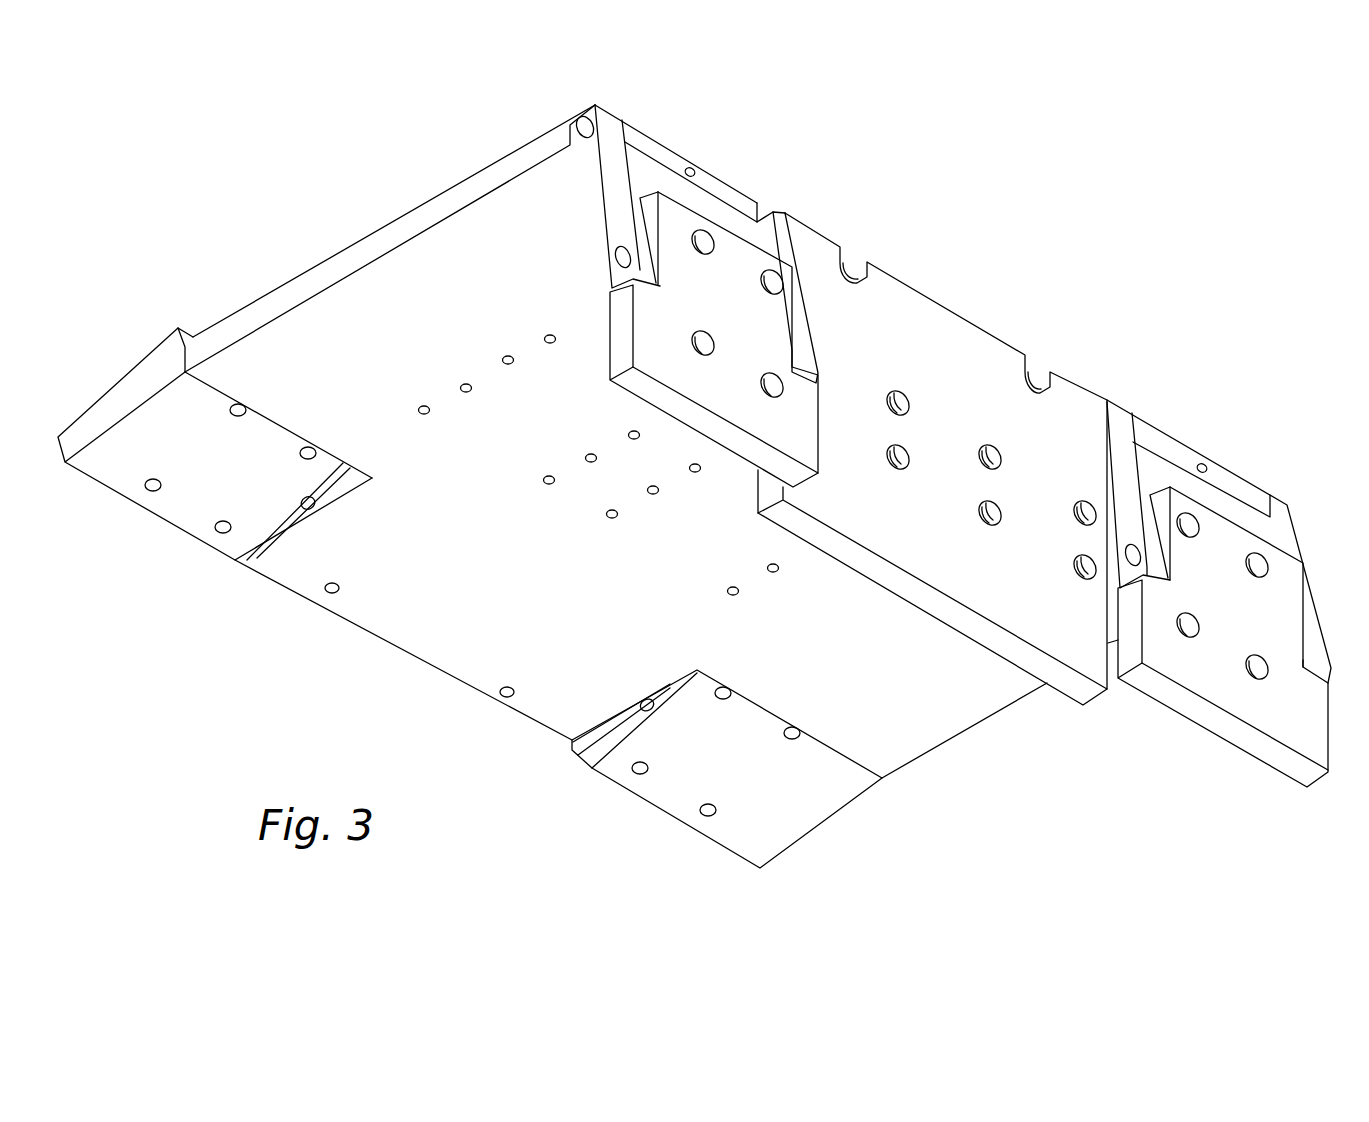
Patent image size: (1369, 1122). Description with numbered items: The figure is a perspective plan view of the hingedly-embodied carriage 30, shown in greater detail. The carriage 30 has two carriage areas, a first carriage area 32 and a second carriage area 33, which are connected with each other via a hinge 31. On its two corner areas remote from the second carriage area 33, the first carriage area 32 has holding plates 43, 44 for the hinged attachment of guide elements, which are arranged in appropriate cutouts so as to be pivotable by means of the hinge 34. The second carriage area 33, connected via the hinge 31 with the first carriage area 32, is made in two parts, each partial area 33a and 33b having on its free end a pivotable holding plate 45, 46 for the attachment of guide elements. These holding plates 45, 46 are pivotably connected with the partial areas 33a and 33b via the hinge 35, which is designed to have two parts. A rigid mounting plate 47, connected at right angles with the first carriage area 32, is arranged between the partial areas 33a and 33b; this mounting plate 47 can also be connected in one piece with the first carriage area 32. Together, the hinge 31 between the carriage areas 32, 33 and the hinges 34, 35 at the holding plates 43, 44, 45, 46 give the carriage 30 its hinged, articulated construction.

The carriage 30 is at (651, 406).
The hinge 31 is at (582, 91).
The first carriage area 32 is at (386, 238).
The second carriage area 33 is at (963, 355).
The partial area 33a is at (587, 196).
The partial area 33b is at (1219, 541).
The hinge 34 is at (458, 609).
The hinge 35 is at (864, 405).
The holding plate 43 is at (215, 461).
The holding plate 44 is at (727, 776).
The holding plate 45 is at (706, 296).
The holding plate 46 is at (1223, 637).
The rigid mounting plate 47 is at (932, 459).